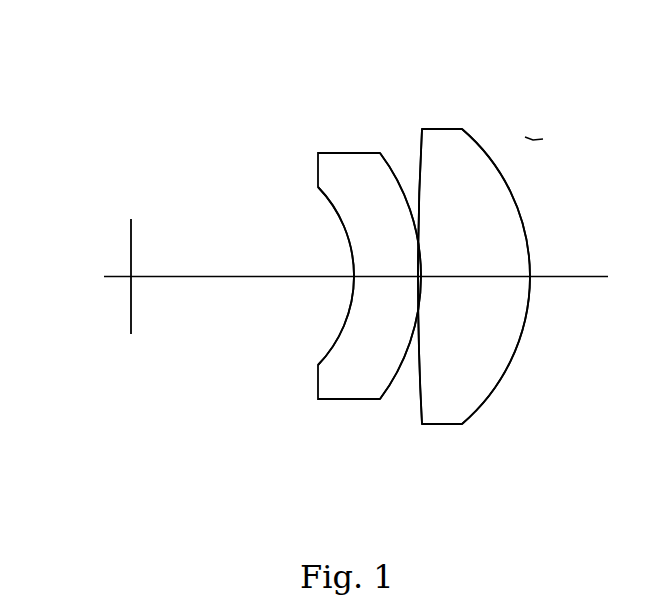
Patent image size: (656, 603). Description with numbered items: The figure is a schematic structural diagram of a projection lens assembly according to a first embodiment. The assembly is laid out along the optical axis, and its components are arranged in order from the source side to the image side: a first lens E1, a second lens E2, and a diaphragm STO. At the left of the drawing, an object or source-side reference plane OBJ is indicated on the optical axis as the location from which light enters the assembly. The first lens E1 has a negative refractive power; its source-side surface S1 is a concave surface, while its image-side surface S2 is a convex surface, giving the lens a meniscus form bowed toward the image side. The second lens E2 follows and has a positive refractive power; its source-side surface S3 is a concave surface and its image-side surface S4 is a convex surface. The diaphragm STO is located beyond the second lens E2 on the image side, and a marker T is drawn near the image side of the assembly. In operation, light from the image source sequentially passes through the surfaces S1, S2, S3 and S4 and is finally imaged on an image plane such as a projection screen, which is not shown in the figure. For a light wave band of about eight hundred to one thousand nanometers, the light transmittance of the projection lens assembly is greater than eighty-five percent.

The object plane OBJ is at (81, 353).
The first lens E1 is at (369, 207).
The second lens E2 is at (474, 219).
The source-side surface of the first lens S1 is at (311, 337).
The image-side surface of the first lens S2 is at (378, 320).
The source-side surface of the second lens S3 is at (458, 308).
The image-side surface of the second lens S4 is at (546, 308).
The diaphragm STO is at (588, 108).
The T marker T is at (532, 421).